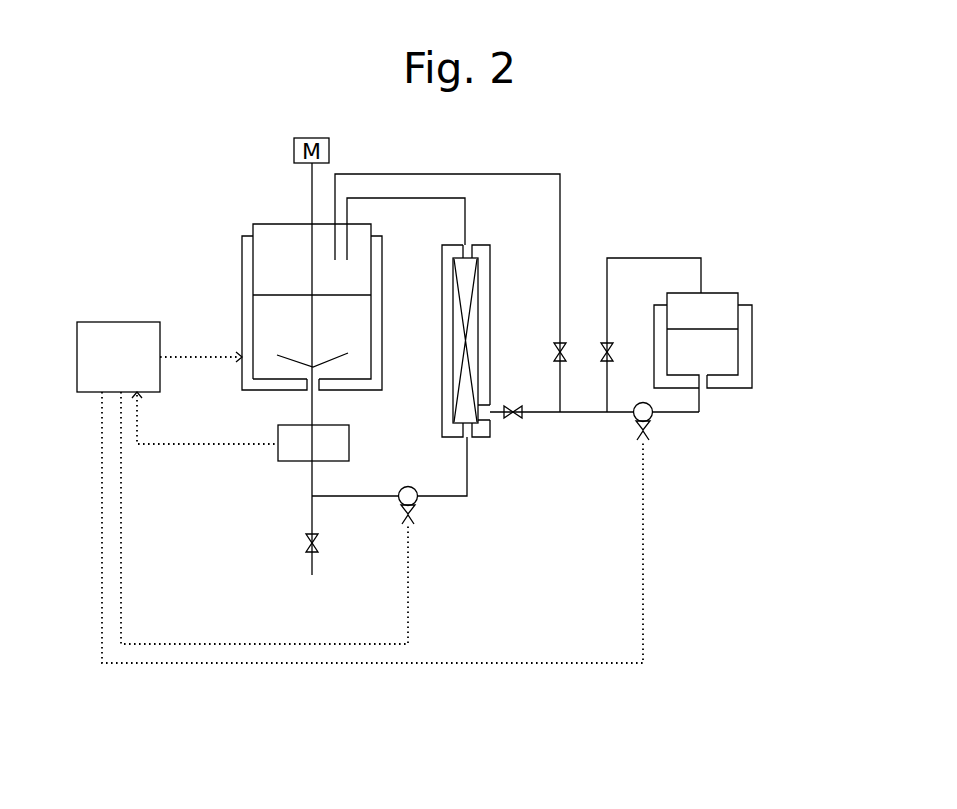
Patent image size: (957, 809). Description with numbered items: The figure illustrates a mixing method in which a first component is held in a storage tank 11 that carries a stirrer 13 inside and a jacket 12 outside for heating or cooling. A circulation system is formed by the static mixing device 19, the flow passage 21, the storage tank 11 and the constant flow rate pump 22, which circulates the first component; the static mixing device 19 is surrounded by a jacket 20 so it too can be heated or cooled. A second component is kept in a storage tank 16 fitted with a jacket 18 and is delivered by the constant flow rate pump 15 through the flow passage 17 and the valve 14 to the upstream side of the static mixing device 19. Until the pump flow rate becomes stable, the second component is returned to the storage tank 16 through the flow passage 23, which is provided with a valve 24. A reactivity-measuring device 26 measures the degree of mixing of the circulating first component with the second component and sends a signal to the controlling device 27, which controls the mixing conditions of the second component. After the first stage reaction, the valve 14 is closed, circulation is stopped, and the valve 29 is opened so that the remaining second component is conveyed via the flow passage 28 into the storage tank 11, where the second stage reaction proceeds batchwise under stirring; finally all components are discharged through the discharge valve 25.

The storage tank 11 is at (272, 243).
The jacket 12 is at (242, 290).
The stirrer 13 is at (335, 365).
The valve 14 is at (513, 422).
The constant flow rate pump 15 is at (656, 421).
The storage tank 16 is at (705, 310).
The flow passage 17 is at (551, 418).
The jacket 18 is at (733, 392).
The static mixing device 19 is at (475, 357).
The jacket 20 is at (490, 290).
The flow passage 21 is at (397, 195).
The constant flow rate pump 22 is at (418, 503).
The flow passage 23 is at (655, 255).
The valve 24 is at (612, 338).
The discharge valve 25 is at (323, 540).
The reactivity-measuring device 26 is at (275, 457).
The controlling device 27 is at (110, 322).
The flow passage 28 is at (548, 168).
The valve 29 is at (562, 340).